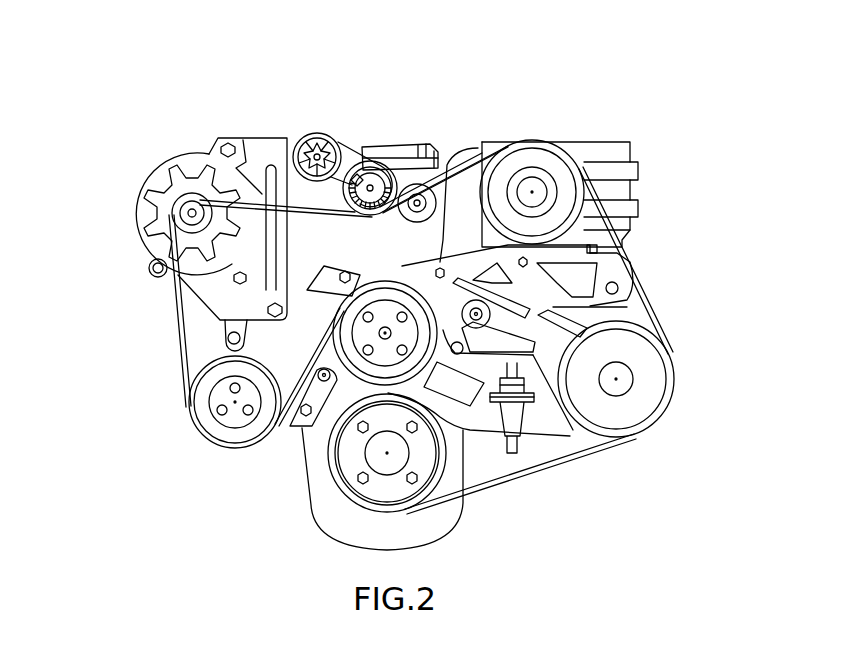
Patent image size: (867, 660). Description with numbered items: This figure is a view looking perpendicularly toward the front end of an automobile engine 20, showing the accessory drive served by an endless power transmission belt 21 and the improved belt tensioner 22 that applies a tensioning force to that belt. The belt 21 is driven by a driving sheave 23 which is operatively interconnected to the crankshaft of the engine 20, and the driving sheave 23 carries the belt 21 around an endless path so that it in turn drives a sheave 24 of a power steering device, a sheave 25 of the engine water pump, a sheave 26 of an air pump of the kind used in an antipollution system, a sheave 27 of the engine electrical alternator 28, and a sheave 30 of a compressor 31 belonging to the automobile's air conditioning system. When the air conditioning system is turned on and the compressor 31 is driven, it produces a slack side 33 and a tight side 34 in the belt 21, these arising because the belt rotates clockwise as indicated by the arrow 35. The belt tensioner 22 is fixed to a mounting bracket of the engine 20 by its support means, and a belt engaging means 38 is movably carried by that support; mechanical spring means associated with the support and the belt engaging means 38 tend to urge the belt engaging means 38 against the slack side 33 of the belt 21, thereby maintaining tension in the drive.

The automobile engine 20 is at (721, 148).
The endless power transmission belt 21 is at (633, 282).
The belt tensioner 22 is at (349, 147).
The driving sheave 23 is at (335, 478).
The sheave of a power steering device 24 is at (675, 368).
The sheave of an engine water pump 25 is at (402, 282).
The sheave of an air pump 26 is at (189, 421).
The sheave of an engine electrical alternator 27 is at (173, 214).
The engine electrical alternator 28 is at (142, 182).
The sheave of a compressor 30 is at (534, 140).
The compressor 31 is at (633, 142).
The slack side 33 is at (440, 178).
The tight side 34 is at (623, 262).
The arrow 35 is at (535, 489).
The belt engaging means 38 is at (355, 220).